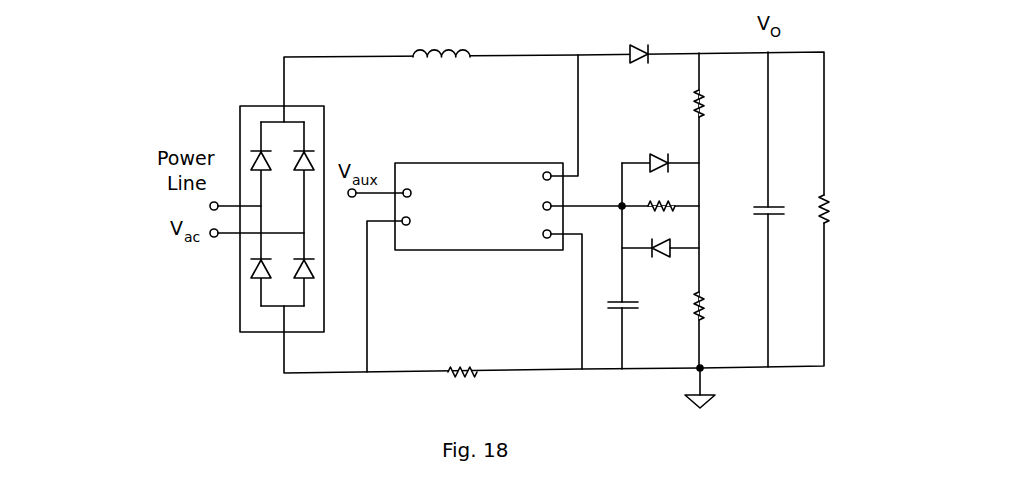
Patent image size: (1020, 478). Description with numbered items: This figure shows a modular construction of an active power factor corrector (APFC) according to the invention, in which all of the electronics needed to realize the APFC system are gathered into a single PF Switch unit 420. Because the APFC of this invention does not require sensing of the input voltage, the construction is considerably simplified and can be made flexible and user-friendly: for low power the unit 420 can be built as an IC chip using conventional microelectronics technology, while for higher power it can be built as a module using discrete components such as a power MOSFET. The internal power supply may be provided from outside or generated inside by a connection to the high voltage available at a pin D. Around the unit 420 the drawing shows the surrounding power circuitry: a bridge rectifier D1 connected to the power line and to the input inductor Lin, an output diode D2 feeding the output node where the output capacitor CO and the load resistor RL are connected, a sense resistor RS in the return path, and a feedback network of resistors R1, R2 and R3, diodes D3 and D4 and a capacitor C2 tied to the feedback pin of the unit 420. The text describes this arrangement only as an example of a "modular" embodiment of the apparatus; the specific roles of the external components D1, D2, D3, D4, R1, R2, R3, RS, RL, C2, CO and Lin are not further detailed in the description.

The PF Switch unit 420 is at (483, 250).
The bridge rectifier D1 is at (282, 234).
The output diode D2 is at (642, 40).
The feedback diode D3 is at (660, 153).
The feedback diode D4 is at (660, 239).
The feedback resistor R1 is at (684, 104).
The feedback resistor R2 is at (686, 307).
The feedback resistor R3 is at (671, 191).
The sense resistor RS is at (462, 387).
The load resistor RL is at (809, 197).
The feedback capacitor C2 is at (614, 266).
The output capacitor CO is at (757, 209).
The input inductor Lin is at (441, 37).